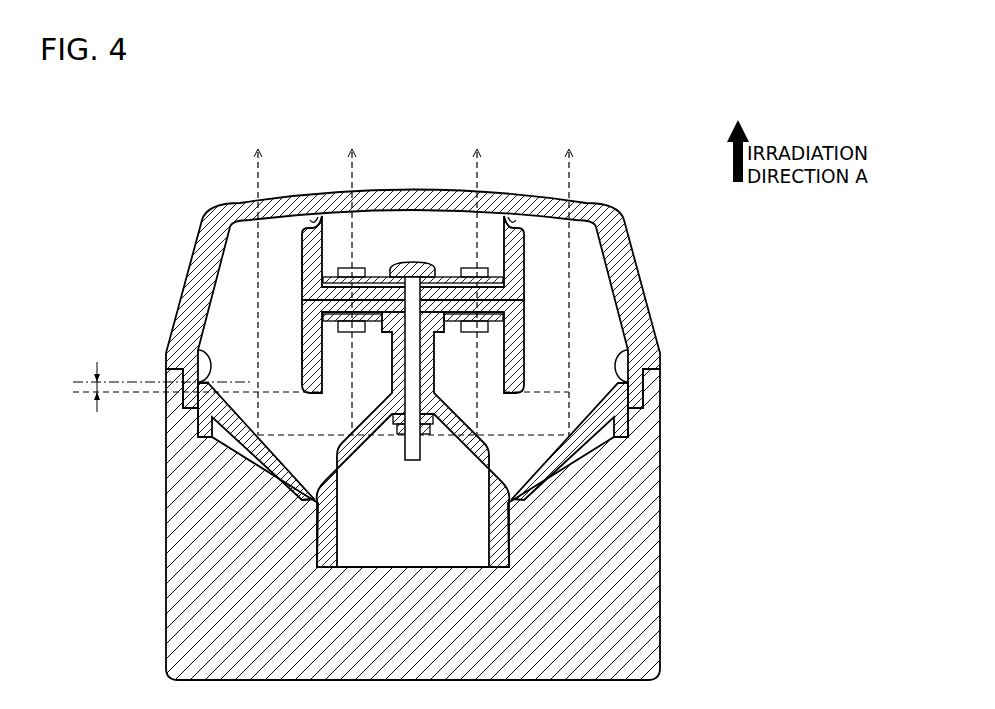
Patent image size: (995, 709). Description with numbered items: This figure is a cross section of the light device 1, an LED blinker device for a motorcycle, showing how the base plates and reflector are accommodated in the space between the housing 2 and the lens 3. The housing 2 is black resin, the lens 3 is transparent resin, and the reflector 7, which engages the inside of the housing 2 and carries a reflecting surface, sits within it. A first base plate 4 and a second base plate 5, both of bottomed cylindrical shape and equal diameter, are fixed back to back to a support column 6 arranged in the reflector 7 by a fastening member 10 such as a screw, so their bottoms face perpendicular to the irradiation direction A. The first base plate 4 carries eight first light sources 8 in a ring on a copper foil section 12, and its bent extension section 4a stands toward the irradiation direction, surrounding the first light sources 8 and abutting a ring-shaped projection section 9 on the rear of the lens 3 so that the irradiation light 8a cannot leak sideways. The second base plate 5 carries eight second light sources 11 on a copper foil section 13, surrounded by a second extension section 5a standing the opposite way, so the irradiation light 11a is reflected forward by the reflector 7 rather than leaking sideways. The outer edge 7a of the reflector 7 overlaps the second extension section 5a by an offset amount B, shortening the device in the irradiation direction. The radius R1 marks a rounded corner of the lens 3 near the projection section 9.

The light device 1 is at (108, 149).
The housing 2 is at (656, 583).
The lens 3 is at (219, 212).
The first base plate 4 is at (525, 268).
The extension section 4a is at (300, 270).
The second base plate 5 is at (525, 350).
The second extension section 5a is at (302, 350).
The support column 6 is at (391, 350).
The reflector 7 is at (587, 413).
The outer edge 7a is at (197, 350).
The first light sources 8 is at (356, 268).
The irradiation light 8a is at (478, 180).
The projection section 9 is at (286, 222).
The fastening member 10 is at (418, 261).
The second light sources 11 is at (385, 336).
The irradiation light 11a is at (570, 180).
The copper foil section 12 is at (333, 276).
The copper foil section 13 is at (308, 468).
The radius of curvature R1 is at (313, 199).
The offset amount B is at (320, 384).